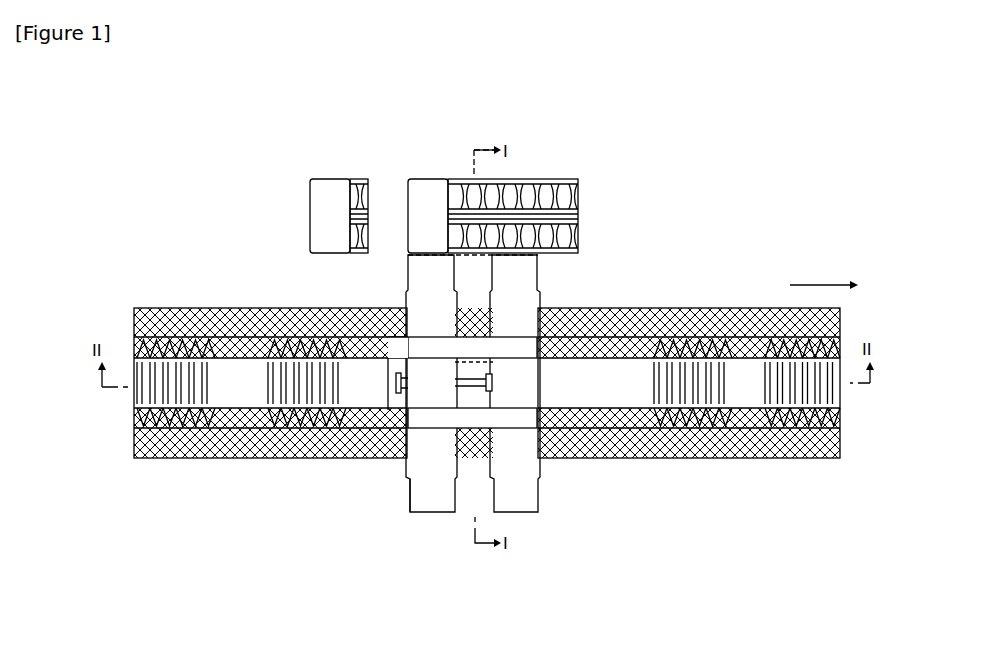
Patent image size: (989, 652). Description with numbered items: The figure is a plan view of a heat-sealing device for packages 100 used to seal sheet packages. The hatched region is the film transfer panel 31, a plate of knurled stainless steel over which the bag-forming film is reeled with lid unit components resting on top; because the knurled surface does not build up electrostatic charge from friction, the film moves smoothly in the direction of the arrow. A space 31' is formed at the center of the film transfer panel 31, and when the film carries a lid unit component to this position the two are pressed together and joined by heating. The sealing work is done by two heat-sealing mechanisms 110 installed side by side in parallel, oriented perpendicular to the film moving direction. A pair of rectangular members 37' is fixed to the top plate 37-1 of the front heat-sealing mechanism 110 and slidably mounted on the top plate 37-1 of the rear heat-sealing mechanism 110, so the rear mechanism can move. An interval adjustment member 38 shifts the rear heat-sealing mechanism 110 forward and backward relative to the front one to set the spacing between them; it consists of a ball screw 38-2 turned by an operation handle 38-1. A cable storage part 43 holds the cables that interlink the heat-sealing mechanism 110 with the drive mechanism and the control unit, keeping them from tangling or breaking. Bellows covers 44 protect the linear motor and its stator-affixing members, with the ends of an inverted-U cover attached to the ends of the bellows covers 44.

The heat-sealing device for packages 100 is at (487, 558).
The heat-sealing mechanism 110 is at (394, 504).
The film transfer panel 31 is at (689, 357).
The space 31' is at (689, 332).
The rectangular member 37' is at (689, 383).
The top plate 37-1 is at (432, 503).
The interval adjustment member 38 is at (330, 478).
The operation handle 38-1 is at (396, 388).
The ball screw 38-2 is at (468, 392).
The cable storage part 43 is at (548, 178).
The bellows cover 44 is at (187, 378).